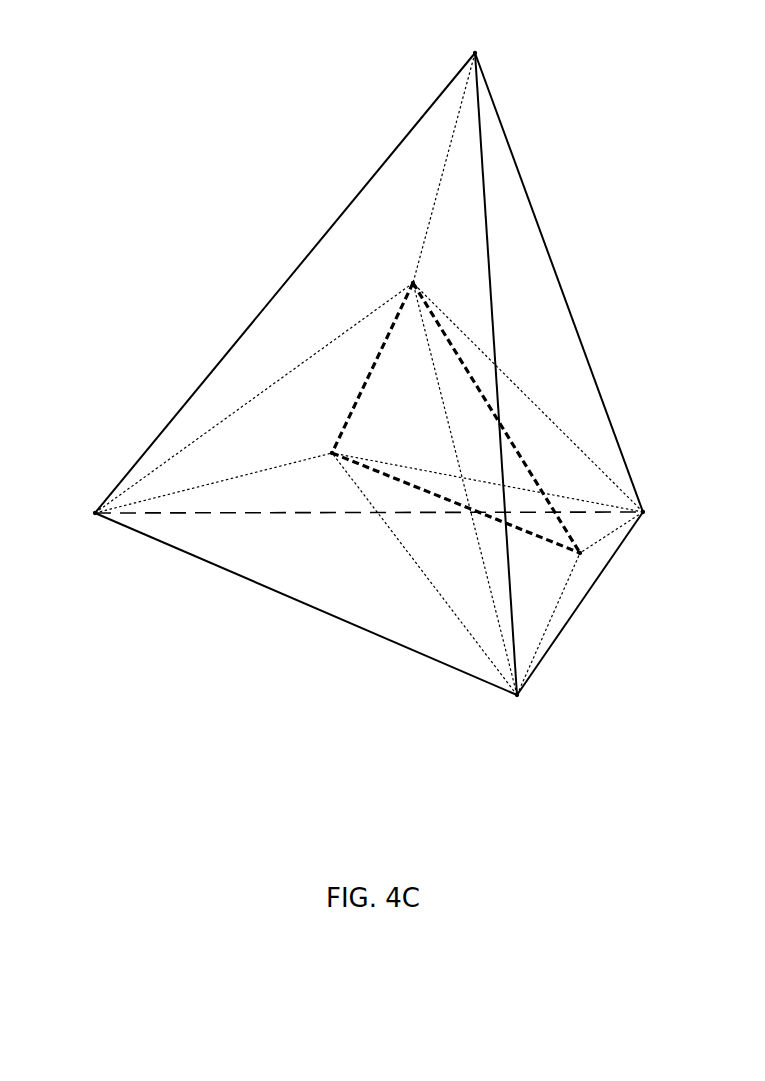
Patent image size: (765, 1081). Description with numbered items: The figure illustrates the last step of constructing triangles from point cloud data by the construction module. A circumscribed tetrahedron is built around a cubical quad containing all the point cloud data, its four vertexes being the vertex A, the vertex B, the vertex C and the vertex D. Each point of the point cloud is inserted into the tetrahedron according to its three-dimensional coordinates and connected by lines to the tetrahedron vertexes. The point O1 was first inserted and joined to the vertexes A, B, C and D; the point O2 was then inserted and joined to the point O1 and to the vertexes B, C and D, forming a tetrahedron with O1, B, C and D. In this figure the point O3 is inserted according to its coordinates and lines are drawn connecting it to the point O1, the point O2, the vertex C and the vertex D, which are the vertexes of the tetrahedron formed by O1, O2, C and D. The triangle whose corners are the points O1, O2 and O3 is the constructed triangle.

The vertex A of tetrahedron ABCD A is at (488, 33).
The vertex B of tetrahedron ABCD B is at (72, 513).
The vertex C of tetrahedron ABCD C is at (517, 726).
The vertex D of tetrahedron ABCD D is at (669, 513).
The point O1 is at (439, 274).
The point O2 is at (330, 477).
The point O3 is at (554, 574).